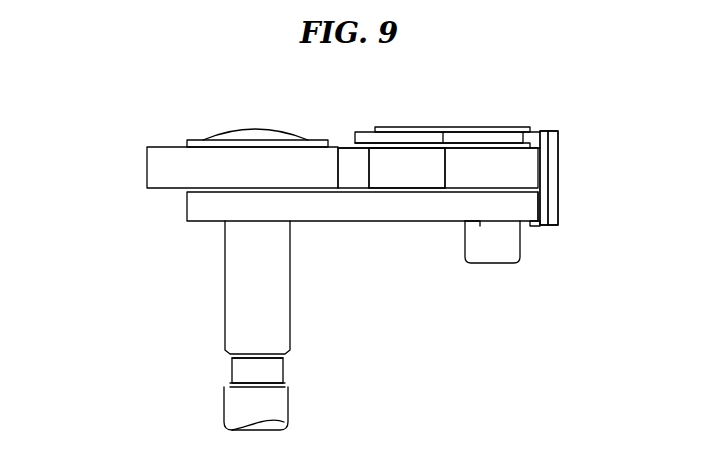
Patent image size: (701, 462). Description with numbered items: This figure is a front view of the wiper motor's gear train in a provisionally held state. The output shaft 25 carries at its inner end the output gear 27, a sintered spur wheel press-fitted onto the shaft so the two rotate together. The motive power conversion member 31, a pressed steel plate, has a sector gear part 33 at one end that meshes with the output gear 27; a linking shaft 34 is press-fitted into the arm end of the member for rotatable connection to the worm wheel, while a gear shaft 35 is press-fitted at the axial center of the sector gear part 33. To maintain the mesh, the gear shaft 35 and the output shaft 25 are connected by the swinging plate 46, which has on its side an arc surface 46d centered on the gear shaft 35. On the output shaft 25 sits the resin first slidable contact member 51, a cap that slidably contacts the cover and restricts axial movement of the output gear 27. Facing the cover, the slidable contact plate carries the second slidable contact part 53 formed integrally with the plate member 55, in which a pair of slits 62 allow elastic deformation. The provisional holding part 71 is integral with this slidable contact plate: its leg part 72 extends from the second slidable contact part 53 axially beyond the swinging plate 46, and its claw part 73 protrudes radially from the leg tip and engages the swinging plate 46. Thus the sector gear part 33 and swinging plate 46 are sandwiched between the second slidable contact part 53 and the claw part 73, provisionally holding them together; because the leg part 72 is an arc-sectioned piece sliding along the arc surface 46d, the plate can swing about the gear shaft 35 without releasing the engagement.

The output shaft 25 is at (273, 410).
The output gear 27 is at (147, 168).
The motive power conversion member 31 is at (520, 167).
The sector gear part 33 is at (392, 158).
The linking shaft 34 is at (487, 250).
The gear shaft 35 is at (478, 225).
The swinging plate 46 is at (389, 214).
The arc surface 46d is at (527, 210).
The first slidable contact member 51 is at (260, 129).
The second slidable contact part 53 is at (493, 127).
The plate member 55 is at (455, 135).
The slits 62 is at (551, 131).
The provisional holding part 71 is at (558, 185).
The leg part 72 is at (556, 207).
The claw part 73 is at (535, 227).